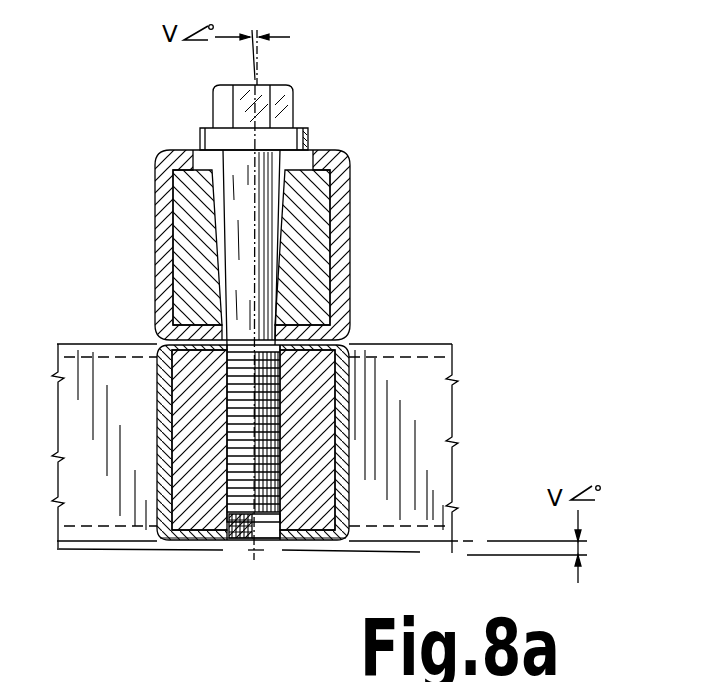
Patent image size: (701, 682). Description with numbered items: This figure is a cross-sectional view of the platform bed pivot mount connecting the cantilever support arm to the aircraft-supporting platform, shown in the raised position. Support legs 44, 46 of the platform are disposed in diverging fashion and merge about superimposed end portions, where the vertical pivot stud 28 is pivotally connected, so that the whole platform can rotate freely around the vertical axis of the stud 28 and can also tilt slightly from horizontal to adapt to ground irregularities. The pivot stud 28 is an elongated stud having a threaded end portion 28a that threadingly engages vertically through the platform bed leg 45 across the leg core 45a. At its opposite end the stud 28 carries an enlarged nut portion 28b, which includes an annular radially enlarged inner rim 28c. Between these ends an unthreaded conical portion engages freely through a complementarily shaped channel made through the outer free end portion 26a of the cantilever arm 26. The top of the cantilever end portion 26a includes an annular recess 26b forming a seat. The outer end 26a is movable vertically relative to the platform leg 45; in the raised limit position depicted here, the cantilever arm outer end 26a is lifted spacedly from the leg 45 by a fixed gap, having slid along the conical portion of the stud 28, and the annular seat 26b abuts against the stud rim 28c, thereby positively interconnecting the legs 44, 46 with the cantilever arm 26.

The cantilever arm 26 is at (372, 193).
The outer end of cantilever arm 26a is at (315, 252).
The annular recess 26b is at (200, 132).
The pivot stud 28 is at (233, 240).
The threaded end portion 28a is at (238, 537).
The enlarged nut portion 28b is at (286, 110).
The annular radially enlarged inner rim 28c is at (309, 137).
The support leg 44 is at (404, 377).
The platform bed leg 45 is at (300, 535).
The leg core 45a is at (183, 541).
The support leg 46 is at (100, 364).